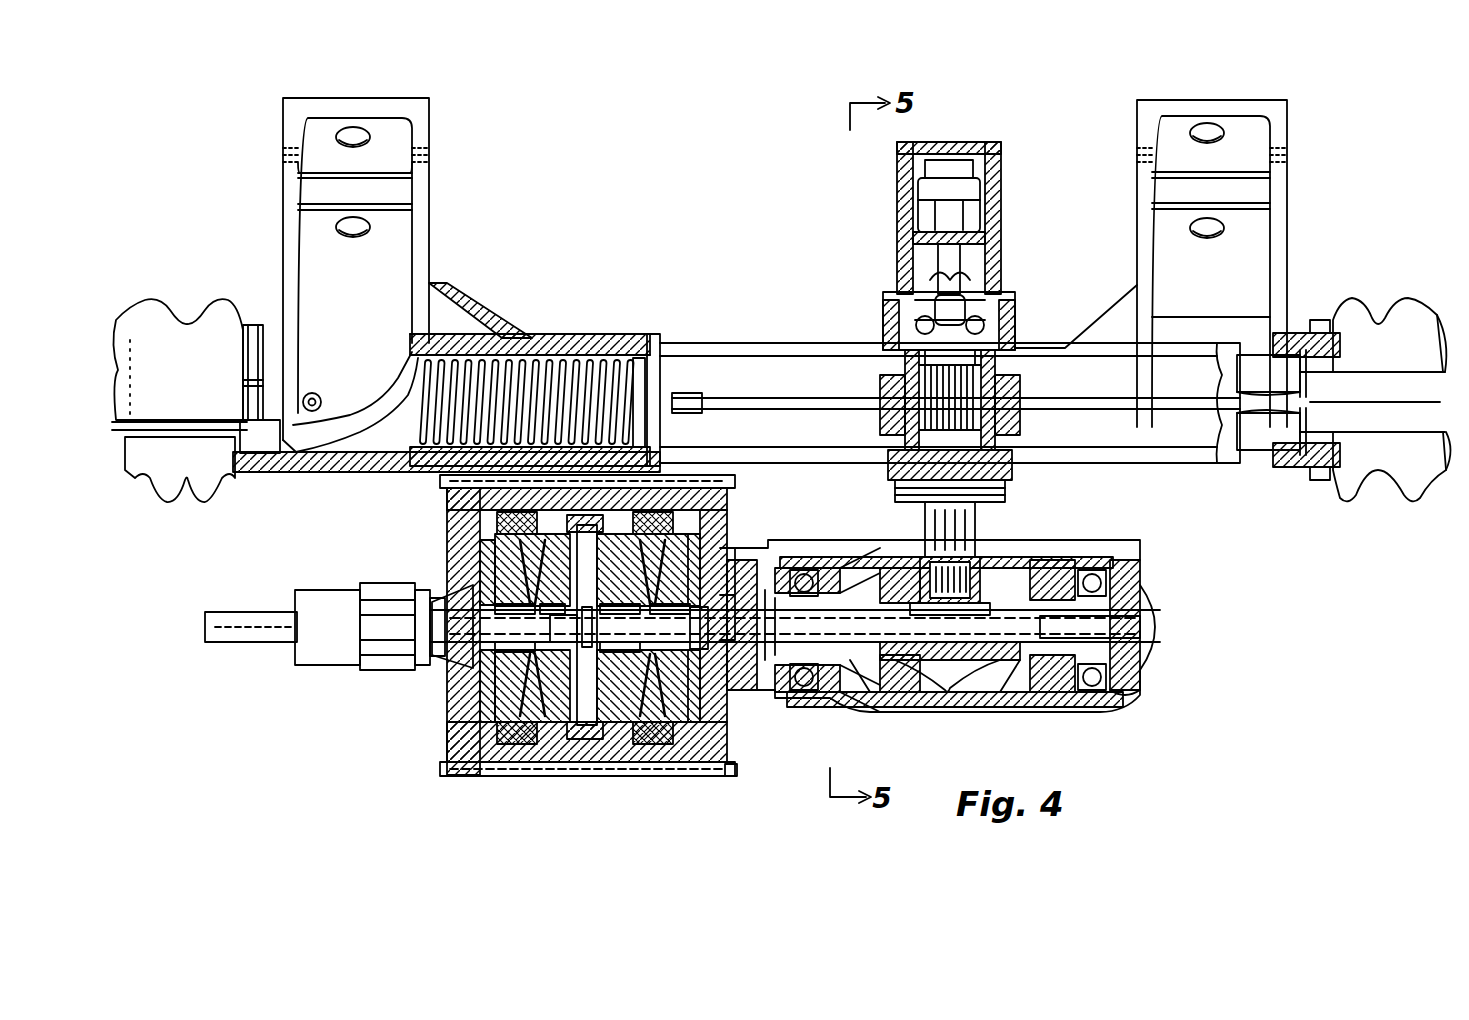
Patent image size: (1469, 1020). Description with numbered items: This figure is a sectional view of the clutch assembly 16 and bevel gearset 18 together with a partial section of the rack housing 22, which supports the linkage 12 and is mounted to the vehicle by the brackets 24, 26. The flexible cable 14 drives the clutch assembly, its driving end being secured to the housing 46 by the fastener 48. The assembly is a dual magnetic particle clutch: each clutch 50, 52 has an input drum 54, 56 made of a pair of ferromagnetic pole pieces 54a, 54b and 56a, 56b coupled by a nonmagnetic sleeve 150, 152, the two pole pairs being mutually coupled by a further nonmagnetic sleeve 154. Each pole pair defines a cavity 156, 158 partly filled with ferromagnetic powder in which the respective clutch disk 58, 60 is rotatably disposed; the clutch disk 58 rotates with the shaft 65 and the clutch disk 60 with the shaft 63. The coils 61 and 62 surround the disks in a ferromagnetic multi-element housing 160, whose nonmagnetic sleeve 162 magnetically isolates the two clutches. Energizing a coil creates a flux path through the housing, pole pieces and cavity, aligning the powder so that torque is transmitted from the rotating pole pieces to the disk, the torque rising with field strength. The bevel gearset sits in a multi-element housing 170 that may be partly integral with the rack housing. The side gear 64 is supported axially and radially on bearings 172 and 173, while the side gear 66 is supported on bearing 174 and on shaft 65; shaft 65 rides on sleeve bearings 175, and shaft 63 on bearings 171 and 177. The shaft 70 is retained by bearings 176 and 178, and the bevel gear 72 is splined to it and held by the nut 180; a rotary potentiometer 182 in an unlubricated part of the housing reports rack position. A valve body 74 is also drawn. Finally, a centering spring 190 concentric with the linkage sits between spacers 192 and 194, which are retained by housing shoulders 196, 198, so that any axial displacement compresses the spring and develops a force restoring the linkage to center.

The linkage 12 is at (108, 358).
The flexible cable 14 is at (240, 644).
The clutch assembly 16 is at (442, 818).
The bevel gearset 18 is at (1120, 730).
The rack housing 22 is at (722, 343).
The bracket 24 is at (430, 130).
The bracket 26 is at (1258, 102).
The housing 46 is at (450, 742).
The fastener 48 is at (318, 633).
The clutch 50 is at (430, 782).
The clutch 52 is at (746, 782).
The input drum 54 is at (490, 744).
The ferromagnetic pole piece 54a is at (480, 553).
The ferromagnetic pole piece 54b is at (492, 570).
The input drum 56 is at (702, 764).
The ferromagnetic pole piece 56a is at (618, 604).
The ferromagnetic pole piece 56b is at (706, 604).
The clutch disk 58 is at (470, 682).
The clutch disk 60 is at (650, 676).
The coil 61 is at (540, 745).
The coil 62 is at (640, 750).
The shaft 63 is at (745, 675).
The side gear 64 is at (810, 692).
The shaft 65 is at (722, 582).
The side gear 66 is at (1088, 692).
The shaft 70 is at (897, 335).
The bevel gear 72 is at (1030, 556).
The valve body 74 is at (905, 393).
The nonmagnetic sleeve 150 is at (520, 745).
The nonmagnetic sleeve 152 is at (615, 750).
The nonmagnetic sleeve 154 is at (568, 745).
The cavity 156 is at (458, 578).
The cavity 158 is at (668, 560).
The multi-element housing 160 is at (670, 750).
The nonmagnetic sleeve 162 is at (592, 750).
The multi-element housing 170 is at (1135, 562).
The bearing 171 is at (792, 568).
The bearing 172 is at (790, 704).
The bearing 173 is at (832, 556).
The bearing 174 is at (1132, 692).
The sleeve bearing 175 is at (946, 700).
The bearing 176 is at (1015, 322).
The bearing 177 is at (722, 702).
The bearing 178 is at (1012, 468).
The nut 180 is at (1005, 496).
The rotary potentiometer 182 is at (978, 208).
The centering spring 190 is at (548, 368).
The spacer 192 is at (440, 345).
The spacer 194 is at (640, 358).
The housing shoulder 196 is at (398, 470).
The housing shoulder 198 is at (655, 334).